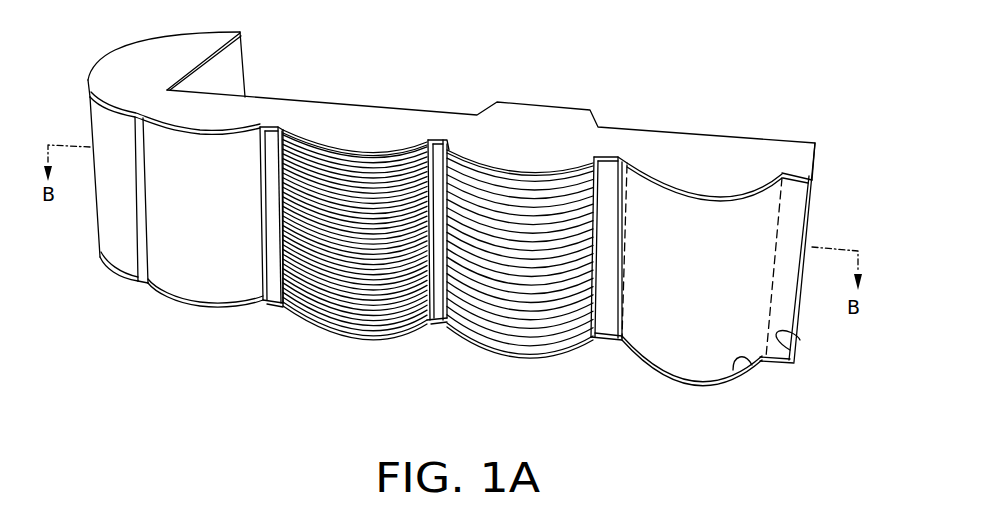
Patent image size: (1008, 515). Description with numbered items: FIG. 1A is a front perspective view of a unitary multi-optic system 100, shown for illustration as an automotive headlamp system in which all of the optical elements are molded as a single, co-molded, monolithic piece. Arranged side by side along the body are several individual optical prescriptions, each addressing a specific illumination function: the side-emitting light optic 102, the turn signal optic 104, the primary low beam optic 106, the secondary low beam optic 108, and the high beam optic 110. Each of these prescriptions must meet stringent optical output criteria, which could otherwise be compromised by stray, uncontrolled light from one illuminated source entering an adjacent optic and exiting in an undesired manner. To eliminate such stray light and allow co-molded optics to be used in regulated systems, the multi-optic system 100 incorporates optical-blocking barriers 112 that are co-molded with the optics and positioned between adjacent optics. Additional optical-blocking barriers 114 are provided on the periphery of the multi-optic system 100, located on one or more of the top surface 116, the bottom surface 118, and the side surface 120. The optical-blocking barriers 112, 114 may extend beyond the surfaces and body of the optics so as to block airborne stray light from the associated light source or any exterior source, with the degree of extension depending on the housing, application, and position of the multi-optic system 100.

The multi-optic system 100 is at (102, 40).
The side-emitting light optic 102 is at (100, 231).
The turn signal optic 104 is at (200, 257).
The primary low beam optic 106 is at (305, 290).
The secondary low beam optic 108 is at (483, 290).
The high beam optic 110 is at (663, 290).
The optical-blocking barrier 112 is at (258, 133).
The additional optical-blocking barrier 114 is at (577, 147).
The top surface 116 is at (786, 180).
The bottom surface 118 is at (752, 365).
The side surface 120 is at (790, 350).